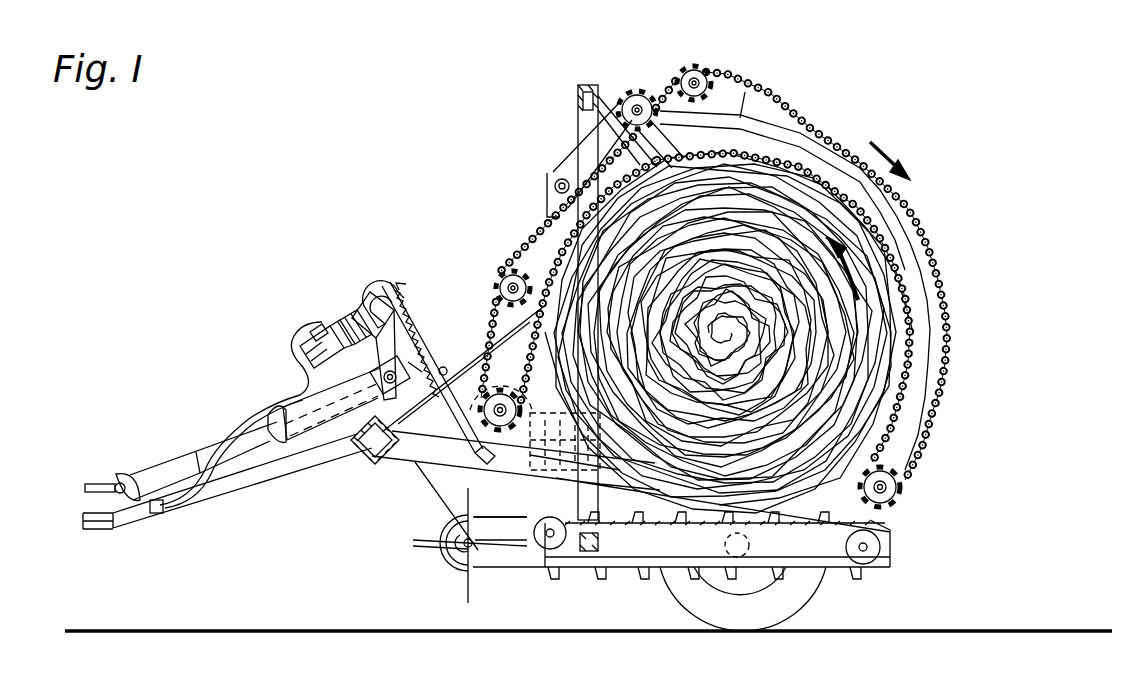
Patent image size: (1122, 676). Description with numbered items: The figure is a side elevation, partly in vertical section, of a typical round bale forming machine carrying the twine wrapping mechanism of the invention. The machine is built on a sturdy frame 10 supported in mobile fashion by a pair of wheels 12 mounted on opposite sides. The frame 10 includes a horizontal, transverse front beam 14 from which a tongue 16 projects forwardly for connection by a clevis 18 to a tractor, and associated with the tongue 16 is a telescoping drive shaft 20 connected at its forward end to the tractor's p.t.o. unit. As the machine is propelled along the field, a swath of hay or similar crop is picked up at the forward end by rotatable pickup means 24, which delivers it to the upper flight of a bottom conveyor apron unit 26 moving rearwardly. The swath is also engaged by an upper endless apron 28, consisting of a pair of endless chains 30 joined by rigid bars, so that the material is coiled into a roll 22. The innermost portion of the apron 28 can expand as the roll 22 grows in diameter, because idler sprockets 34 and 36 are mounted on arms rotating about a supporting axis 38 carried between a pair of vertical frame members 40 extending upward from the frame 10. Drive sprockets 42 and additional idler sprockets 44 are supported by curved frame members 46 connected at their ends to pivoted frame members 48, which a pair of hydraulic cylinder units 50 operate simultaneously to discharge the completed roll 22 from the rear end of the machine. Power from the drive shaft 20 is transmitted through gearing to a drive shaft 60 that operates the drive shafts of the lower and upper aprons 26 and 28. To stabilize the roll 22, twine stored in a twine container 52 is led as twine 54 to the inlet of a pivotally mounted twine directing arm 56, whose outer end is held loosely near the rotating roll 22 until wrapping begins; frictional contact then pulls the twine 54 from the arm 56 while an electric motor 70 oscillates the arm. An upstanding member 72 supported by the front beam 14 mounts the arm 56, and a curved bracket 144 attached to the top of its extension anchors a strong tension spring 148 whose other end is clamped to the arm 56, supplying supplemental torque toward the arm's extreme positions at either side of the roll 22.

The frame 10 is at (430, 505).
The wheels 12 is at (670, 612).
The front beam 14 is at (370, 465).
The tongue 16 is at (235, 500).
The clevis 18 is at (83, 522).
The drive shaft 20 is at (180, 456).
The roll 22 is at (877, 283).
The pickup means 24 is at (458, 588).
The bottom conveyor apron unit 26 is at (618, 536).
The upper endless apron 28 is at (906, 198).
The endless chains 30 is at (812, 125).
The idler sprocket 34 is at (641, 90).
The idler sprocket 36 is at (504, 276).
The supporting axis 38 is at (558, 185).
The vertical frame members 40 is at (575, 112).
The drive sprocket 42 is at (457, 374).
The idler sprockets 44 is at (705, 68).
The curved frame members 46 is at (748, 92).
The pivoted frame members 48 is at (656, 138).
The hydraulic cylinder units 50 is at (478, 380).
The twine container 52 is at (523, 470).
The twine 54 is at (595, 481).
The twine directing arm 56 is at (482, 348).
The drive shaft 60 is at (370, 375).
The electric motor 70 is at (308, 366).
The upstanding member 72 is at (352, 316).
The bracket 144 is at (388, 280).
The tension spring 148 is at (418, 300).